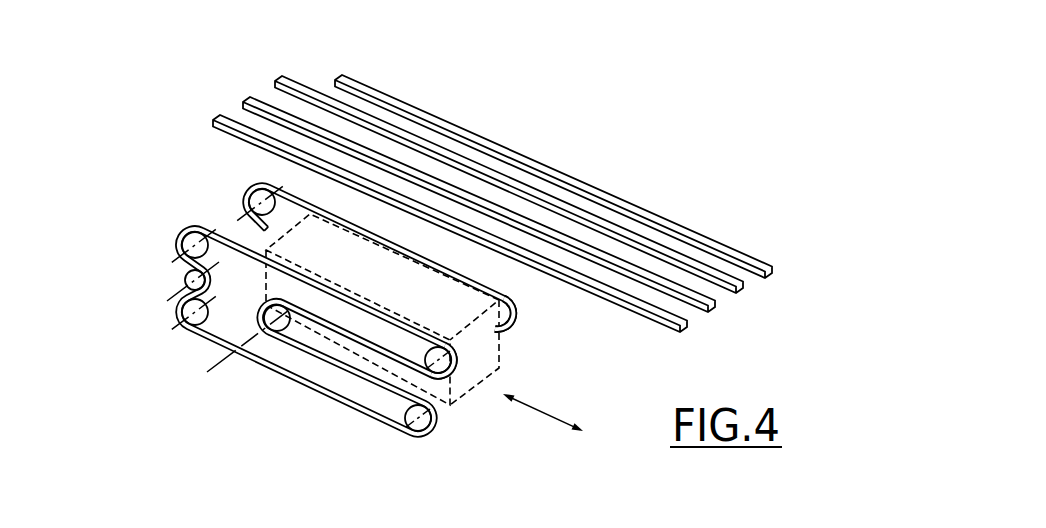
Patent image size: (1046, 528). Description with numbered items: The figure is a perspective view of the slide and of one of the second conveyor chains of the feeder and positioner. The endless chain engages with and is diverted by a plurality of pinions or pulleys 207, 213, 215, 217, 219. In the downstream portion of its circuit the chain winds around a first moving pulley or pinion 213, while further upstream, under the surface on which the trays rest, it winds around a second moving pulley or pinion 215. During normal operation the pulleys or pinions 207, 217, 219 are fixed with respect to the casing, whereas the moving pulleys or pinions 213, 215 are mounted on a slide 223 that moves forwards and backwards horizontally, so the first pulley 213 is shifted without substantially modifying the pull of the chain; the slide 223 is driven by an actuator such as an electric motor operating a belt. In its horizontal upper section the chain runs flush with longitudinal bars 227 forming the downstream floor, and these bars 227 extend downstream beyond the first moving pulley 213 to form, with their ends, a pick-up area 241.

The pinion or pulley 207 is at (253, 190).
The first moving pulley or pinion 213 is at (517, 314).
The second moving pulley or pinion 215 is at (266, 334).
The pinion or pulley 217 is at (181, 283).
The pinion or pulley 219 is at (185, 330).
The slide 223 is at (502, 360).
The longitudinal bars 227 is at (378, 93).
The pick-up area 241 is at (674, 196).